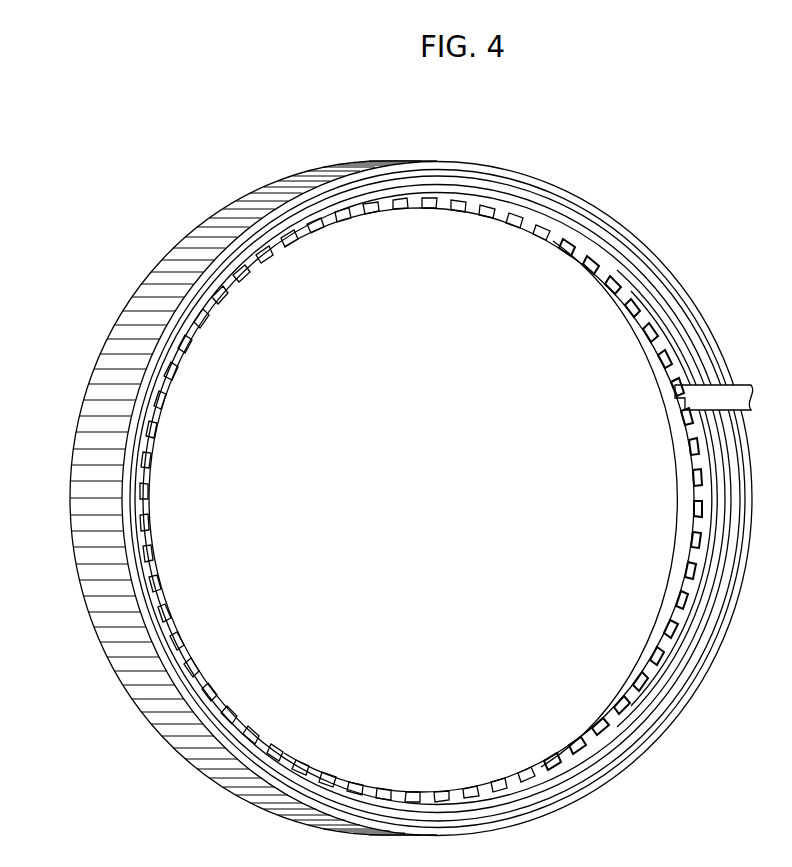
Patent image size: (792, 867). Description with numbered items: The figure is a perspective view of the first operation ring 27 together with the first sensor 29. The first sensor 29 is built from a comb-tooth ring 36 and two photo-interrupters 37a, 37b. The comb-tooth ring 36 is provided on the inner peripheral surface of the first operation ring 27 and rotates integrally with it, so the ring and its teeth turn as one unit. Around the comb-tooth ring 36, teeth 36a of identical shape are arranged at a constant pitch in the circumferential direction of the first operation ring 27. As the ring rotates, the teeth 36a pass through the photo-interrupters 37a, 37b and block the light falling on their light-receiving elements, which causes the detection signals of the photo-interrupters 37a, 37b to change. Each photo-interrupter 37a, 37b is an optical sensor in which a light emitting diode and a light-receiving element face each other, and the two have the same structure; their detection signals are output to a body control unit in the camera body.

The first operation ring 27 is at (607, 190).
The first sensor 29 is at (421, 500).
The comb-tooth ring 36 is at (647, 331).
The teeth 36a is at (613, 282).
The photo-interrupter 37a is at (658, 363).
The photo-interrupter 37b is at (680, 435).